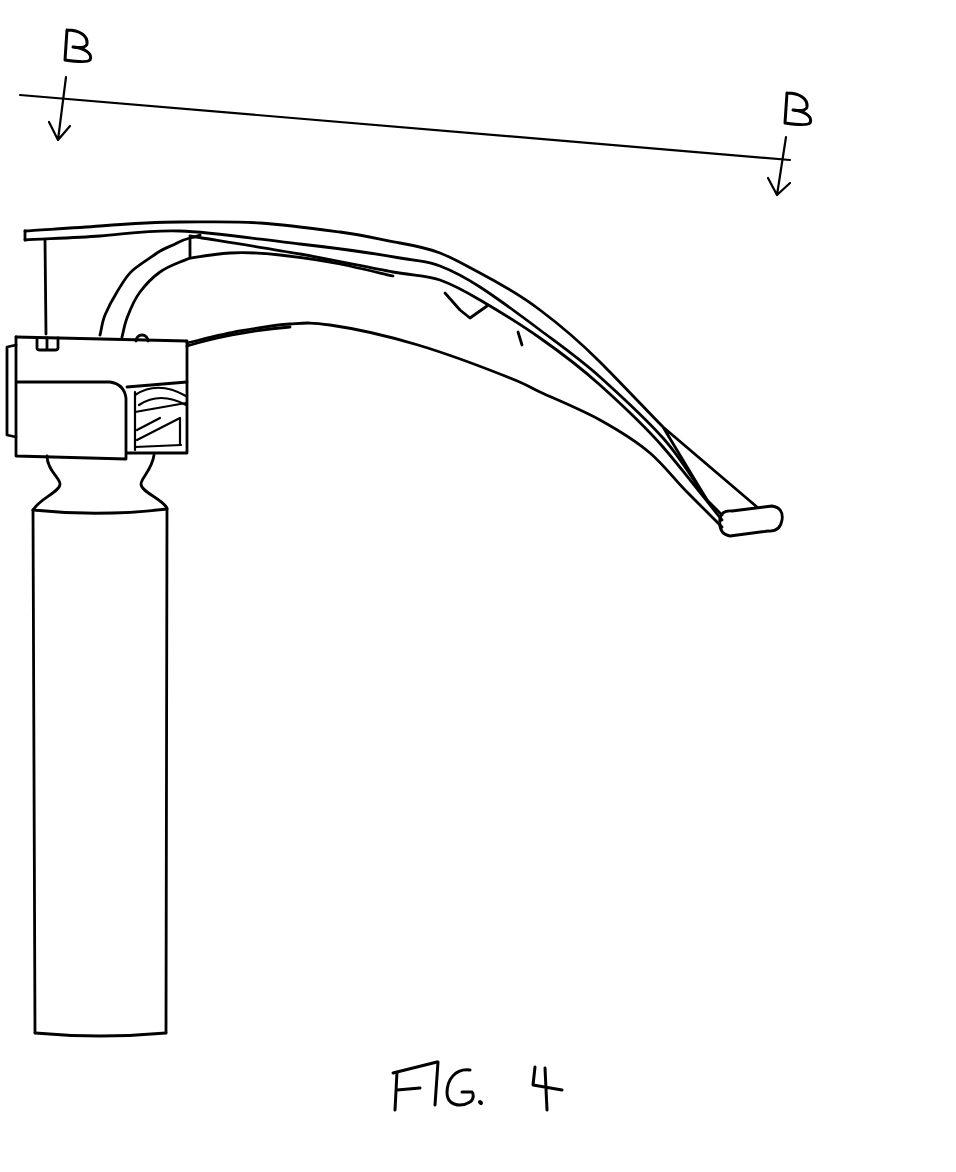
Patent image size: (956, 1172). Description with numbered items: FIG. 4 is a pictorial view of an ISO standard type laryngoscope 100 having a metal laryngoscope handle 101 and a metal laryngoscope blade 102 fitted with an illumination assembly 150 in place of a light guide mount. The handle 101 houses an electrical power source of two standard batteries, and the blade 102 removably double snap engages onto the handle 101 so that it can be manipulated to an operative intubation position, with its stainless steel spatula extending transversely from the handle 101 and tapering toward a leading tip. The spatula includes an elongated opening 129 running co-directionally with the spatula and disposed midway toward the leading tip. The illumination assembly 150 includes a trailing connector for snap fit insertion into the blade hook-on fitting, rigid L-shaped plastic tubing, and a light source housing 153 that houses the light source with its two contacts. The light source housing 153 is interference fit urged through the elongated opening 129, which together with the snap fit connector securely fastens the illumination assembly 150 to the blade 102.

The laryngoscope 100 is at (559, 101).
The laryngoscope handle 101 is at (142, 770).
The illumination assembly 150 is at (582, 246).
The laryngoscope blade 102 is at (585, 355).
The light source housing 153 is at (460, 300).
The elongated opening 129 is at (470, 320).